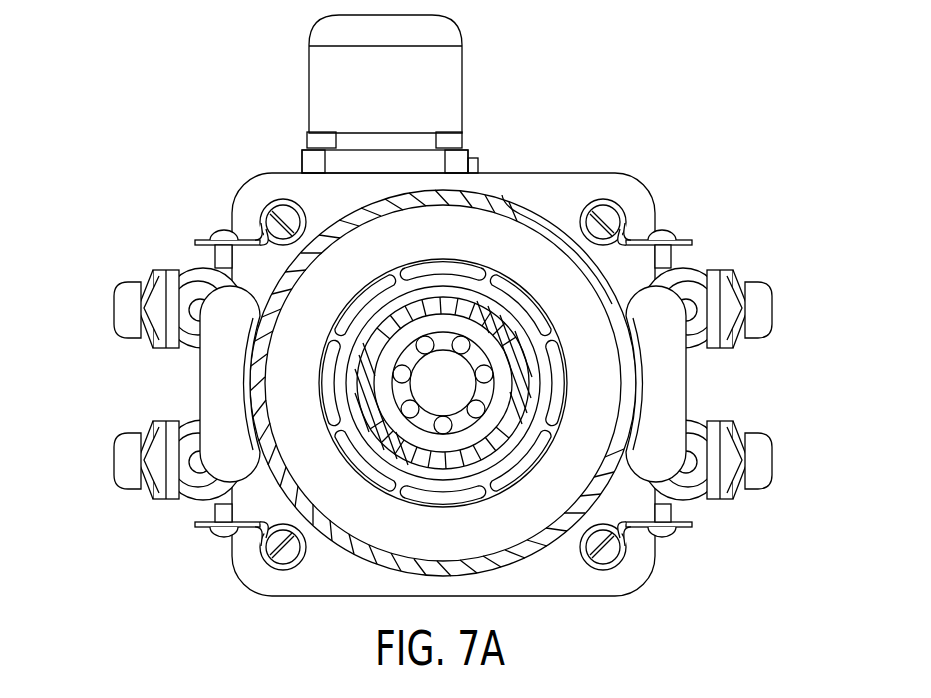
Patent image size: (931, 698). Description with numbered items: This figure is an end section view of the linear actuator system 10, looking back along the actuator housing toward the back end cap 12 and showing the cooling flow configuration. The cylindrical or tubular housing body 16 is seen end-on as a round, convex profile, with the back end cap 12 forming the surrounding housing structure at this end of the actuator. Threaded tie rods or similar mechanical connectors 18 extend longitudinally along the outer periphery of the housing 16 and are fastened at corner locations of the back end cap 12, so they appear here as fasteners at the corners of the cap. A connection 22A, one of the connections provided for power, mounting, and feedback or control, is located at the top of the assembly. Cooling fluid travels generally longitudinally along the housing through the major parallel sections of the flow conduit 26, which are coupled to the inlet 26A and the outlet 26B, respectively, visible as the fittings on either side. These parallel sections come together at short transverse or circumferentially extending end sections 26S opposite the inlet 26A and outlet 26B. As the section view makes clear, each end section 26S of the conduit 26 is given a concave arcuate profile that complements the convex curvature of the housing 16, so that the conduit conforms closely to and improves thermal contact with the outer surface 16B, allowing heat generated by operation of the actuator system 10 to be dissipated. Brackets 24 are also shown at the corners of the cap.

The linear actuator system 10 is at (158, 86).
The back end cap 12 is at (265, 192).
The housing body 16 is at (508, 205).
The outer surface 16B is at (545, 550).
The mechanical connectors 18 is at (621, 206).
The connection 22A is at (347, 94).
The mounting brackets 24 is at (223, 232).
The flow conduit 26 is at (193, 273).
The inlet 26A is at (128, 300).
The outlet 26B is at (128, 457).
The end section 26S is at (225, 395).